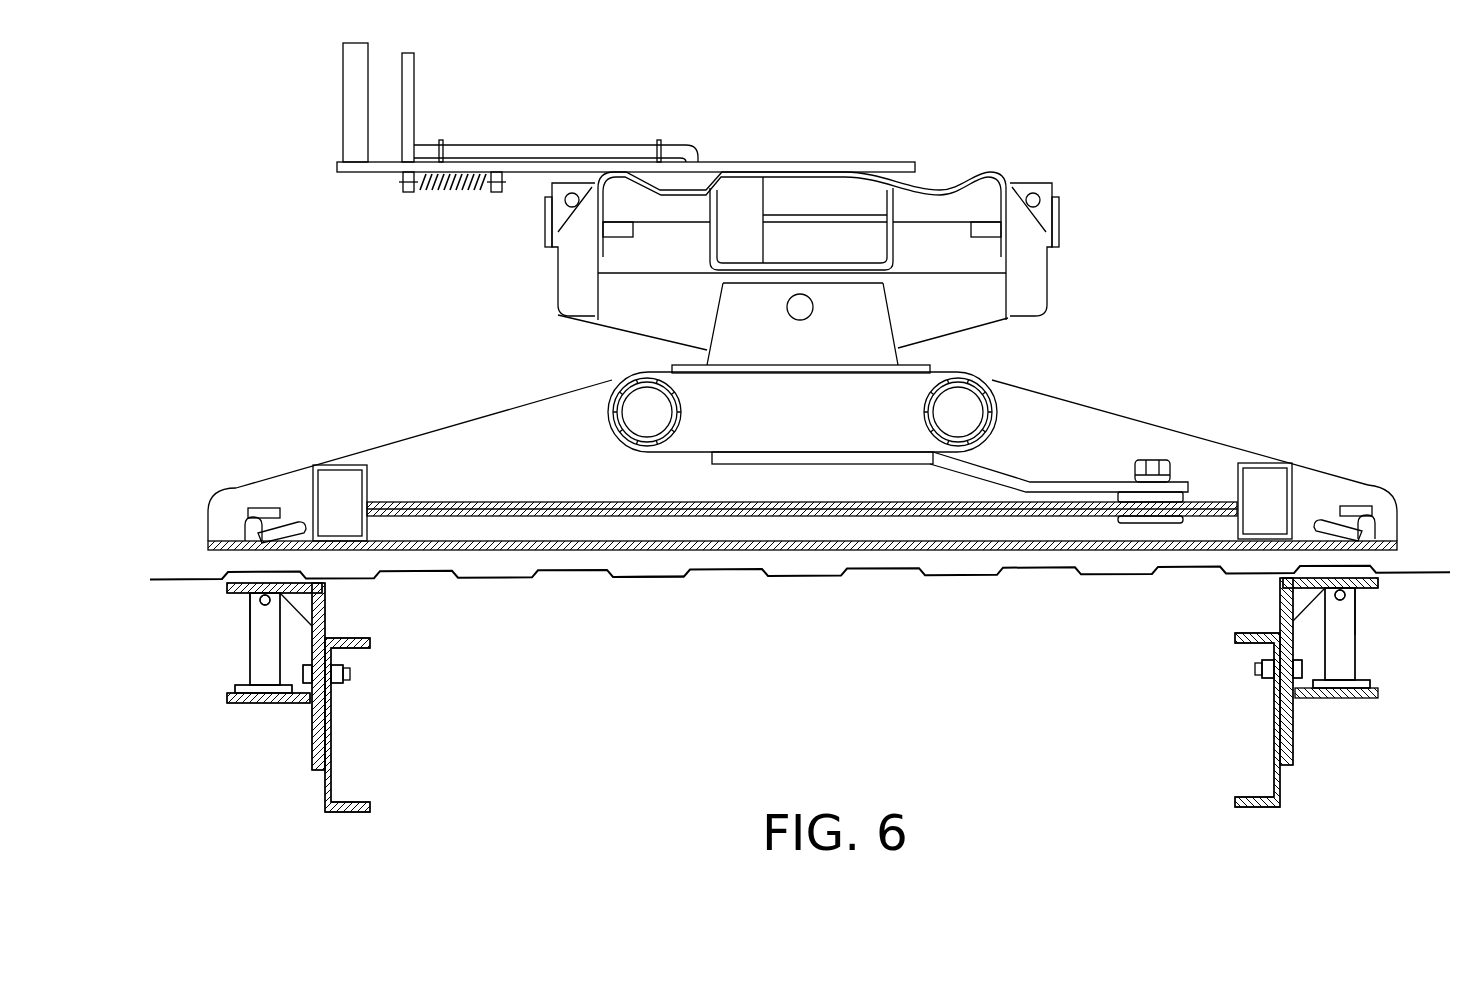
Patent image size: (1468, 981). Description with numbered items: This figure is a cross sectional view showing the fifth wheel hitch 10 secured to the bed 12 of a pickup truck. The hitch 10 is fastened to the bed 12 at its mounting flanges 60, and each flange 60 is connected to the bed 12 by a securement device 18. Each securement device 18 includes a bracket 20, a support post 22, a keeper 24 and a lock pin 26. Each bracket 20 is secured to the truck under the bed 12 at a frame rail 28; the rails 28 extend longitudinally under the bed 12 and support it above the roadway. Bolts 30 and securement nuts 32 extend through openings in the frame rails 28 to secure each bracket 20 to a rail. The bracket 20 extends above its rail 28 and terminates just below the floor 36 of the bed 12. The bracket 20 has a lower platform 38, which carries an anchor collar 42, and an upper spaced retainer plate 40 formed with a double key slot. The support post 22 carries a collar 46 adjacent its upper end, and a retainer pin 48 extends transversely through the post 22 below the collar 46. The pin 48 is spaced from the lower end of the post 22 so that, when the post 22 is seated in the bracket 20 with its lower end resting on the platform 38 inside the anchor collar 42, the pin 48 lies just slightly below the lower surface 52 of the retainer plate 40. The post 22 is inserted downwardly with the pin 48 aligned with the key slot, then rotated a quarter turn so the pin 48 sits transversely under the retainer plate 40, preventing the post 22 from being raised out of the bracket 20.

The fifth wheel hitch 10 is at (503, 410).
The bed 12 is at (800, 577).
The securement device 18 is at (222, 708).
The bracket 20 is at (315, 732).
The support post 22 is at (272, 633).
The keeper 24 is at (258, 522).
The lock pin 26 is at (295, 530).
The frame rail 28 is at (331, 745).
The bolt 30 is at (348, 676).
The securement nut 32 is at (345, 665).
The floor 36 is at (640, 580).
The lower platform 38 is at (250, 705).
The retainer plate 40 is at (228, 582).
The anchor collar 42 is at (248, 688).
The collar 46 is at (298, 552).
The retainer pin 48 is at (262, 612).
The lower surface 52 is at (248, 598).
The mounting flange 60 is at (218, 527).